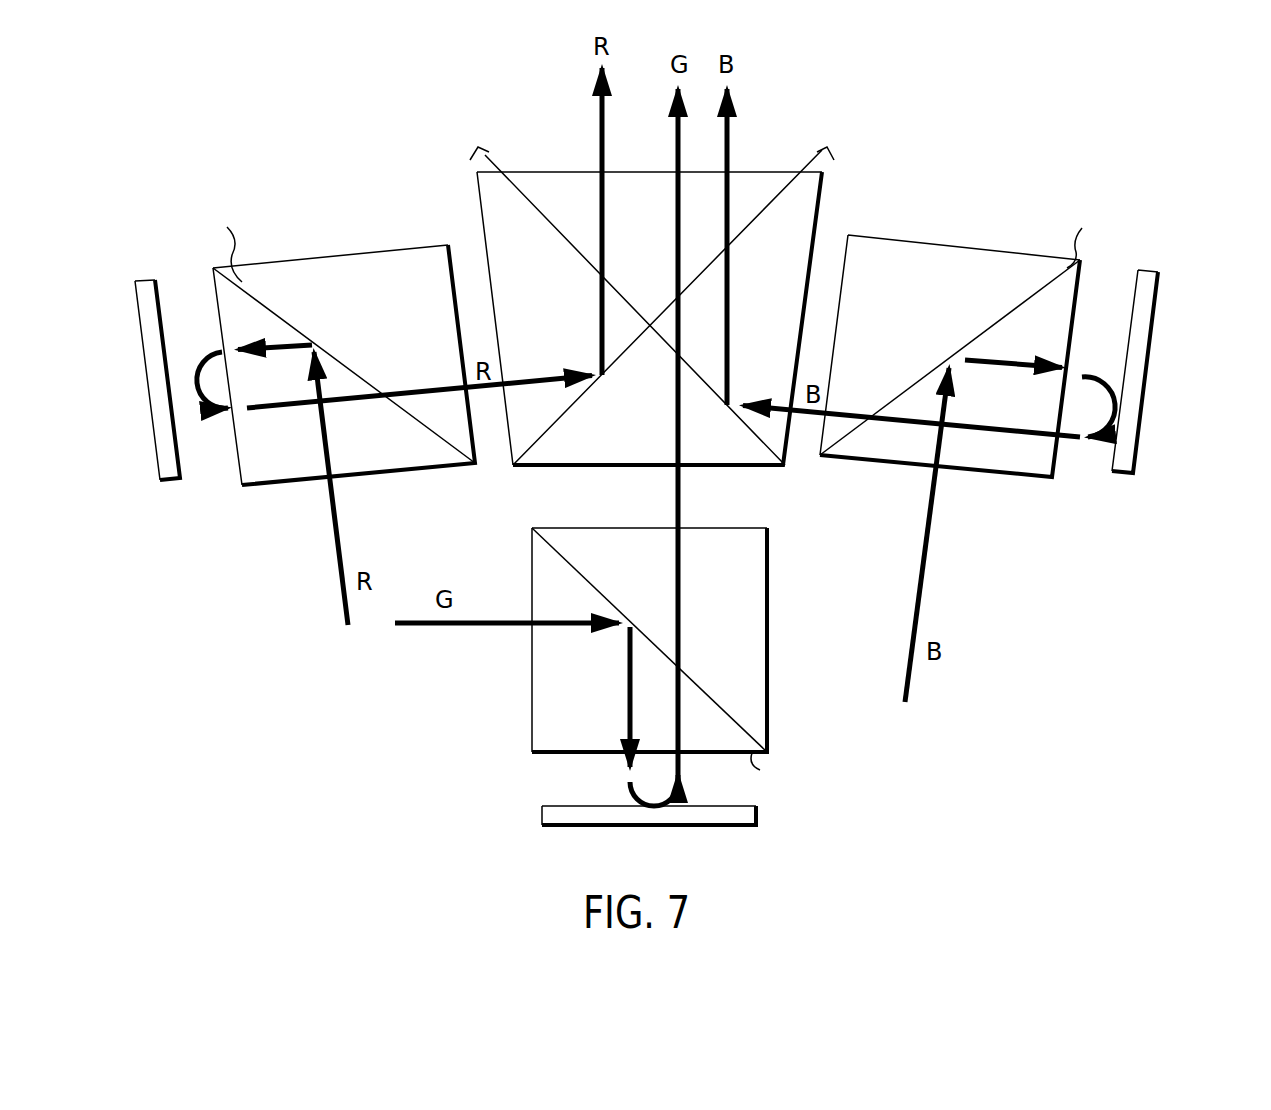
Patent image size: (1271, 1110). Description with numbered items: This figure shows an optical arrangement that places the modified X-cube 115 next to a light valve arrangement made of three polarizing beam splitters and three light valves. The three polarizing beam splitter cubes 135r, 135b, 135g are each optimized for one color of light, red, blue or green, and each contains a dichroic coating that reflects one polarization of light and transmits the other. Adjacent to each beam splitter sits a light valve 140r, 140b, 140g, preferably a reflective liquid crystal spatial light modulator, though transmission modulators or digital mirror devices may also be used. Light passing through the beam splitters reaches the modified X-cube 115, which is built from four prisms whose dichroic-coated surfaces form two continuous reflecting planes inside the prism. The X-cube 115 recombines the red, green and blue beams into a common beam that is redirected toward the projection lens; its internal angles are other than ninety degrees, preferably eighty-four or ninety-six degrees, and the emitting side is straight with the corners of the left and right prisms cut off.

The modified X-cube 115 is at (820, 190).
The polarizing beam splitter cube 135r is at (347, 268).
The polarizing beam splitter cube 135g is at (750, 598).
The polarizing beam splitter cube 135b is at (1010, 260).
The light valve 140r is at (143, 288).
The light valve 140g is at (742, 817).
The light valve 140b is at (1148, 297).